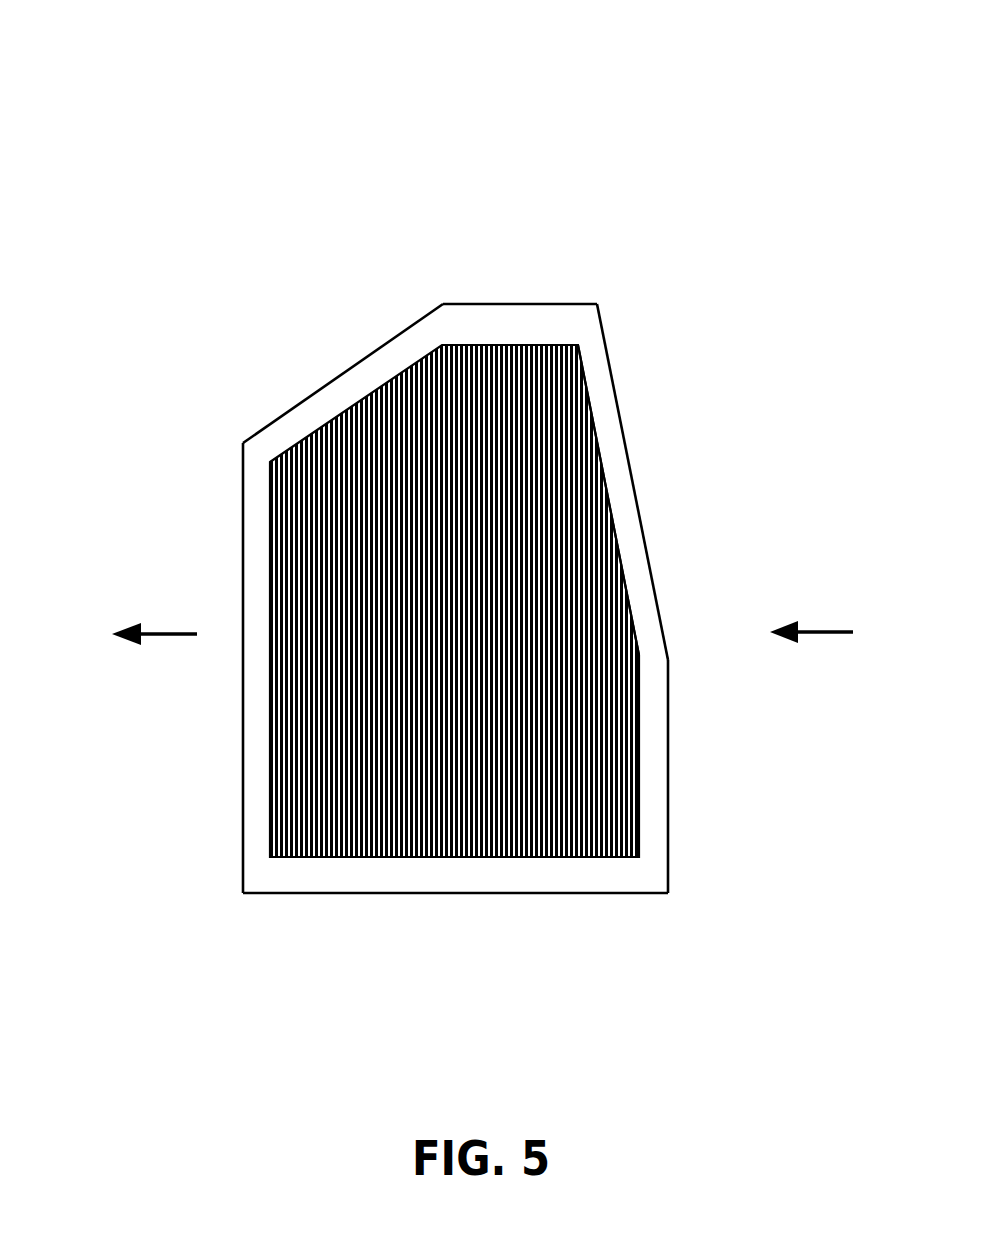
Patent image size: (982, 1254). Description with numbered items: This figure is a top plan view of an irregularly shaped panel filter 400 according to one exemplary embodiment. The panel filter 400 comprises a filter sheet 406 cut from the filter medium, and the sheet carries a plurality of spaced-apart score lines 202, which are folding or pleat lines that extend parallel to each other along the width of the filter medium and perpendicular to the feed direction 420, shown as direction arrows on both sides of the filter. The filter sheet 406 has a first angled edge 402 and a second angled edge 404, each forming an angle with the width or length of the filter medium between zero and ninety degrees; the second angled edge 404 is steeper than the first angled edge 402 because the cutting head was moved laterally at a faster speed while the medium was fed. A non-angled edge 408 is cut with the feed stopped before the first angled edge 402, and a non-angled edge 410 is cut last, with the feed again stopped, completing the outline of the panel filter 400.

The panel filter 400 is at (166, 86).
The score lines 202 is at (525, 380).
The first angled edge 402 is at (330, 423).
The second angled edge 404 is at (603, 469).
The filter sheet 406 is at (588, 620).
The non-angled edge 408 is at (270, 742).
The non-angled edge 410 is at (639, 767).
The feed direction 420 is at (156, 640).